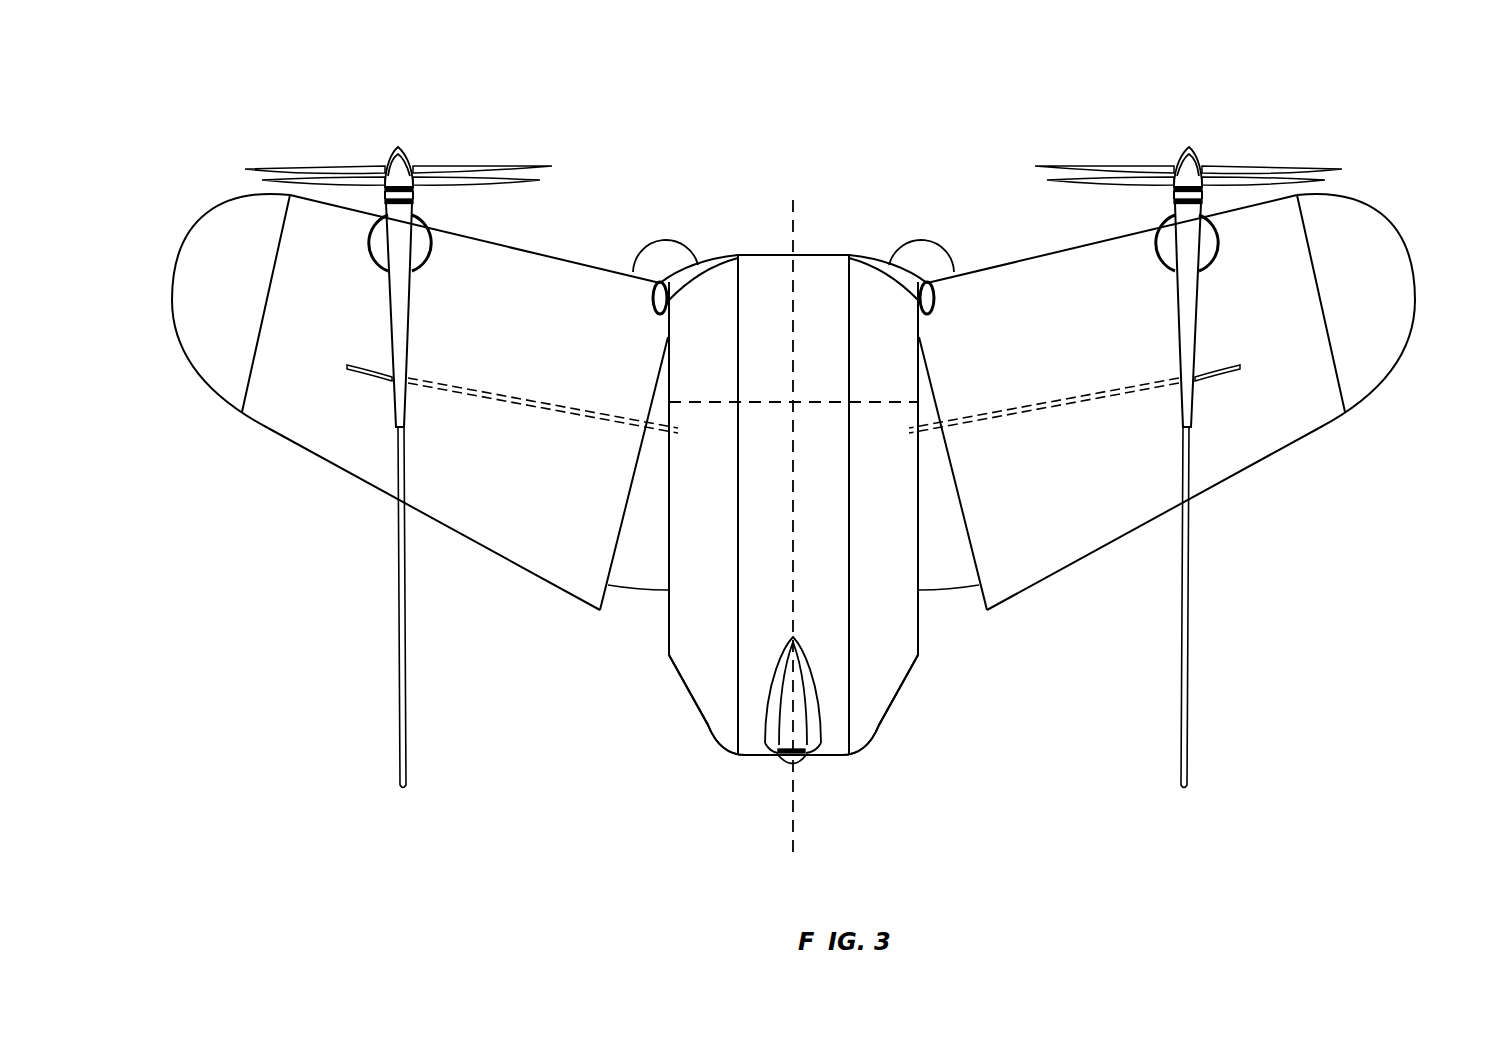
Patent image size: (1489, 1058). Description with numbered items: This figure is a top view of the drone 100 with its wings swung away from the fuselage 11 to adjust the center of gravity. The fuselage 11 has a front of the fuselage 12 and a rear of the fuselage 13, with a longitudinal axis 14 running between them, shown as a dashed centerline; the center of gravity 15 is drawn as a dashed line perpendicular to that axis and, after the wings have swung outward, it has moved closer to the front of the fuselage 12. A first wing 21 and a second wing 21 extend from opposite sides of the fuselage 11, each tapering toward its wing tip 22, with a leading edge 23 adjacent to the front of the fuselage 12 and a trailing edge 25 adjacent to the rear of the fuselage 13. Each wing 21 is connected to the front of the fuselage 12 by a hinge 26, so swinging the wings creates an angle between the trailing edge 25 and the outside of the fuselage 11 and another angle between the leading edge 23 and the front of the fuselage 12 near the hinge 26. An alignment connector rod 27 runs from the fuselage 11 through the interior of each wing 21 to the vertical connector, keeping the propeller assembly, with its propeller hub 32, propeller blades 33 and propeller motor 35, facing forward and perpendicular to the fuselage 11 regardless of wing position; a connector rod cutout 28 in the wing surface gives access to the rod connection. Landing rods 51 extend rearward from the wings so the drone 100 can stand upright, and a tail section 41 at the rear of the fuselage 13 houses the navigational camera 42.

The drone 100 is at (208, 98).
The fuselage 11 is at (920, 632).
The front of the fuselage 12 is at (814, 238).
The rear of the fuselage 13 is at (721, 772).
The longitudinal axis 14 is at (790, 214).
The center of gravity 15 is at (876, 395).
The wing 21 is at (588, 607).
The wing tip 22 is at (178, 238).
The leading edge 23 is at (512, 248).
The trailing edge 25 is at (514, 563).
The hinge 26 is at (651, 298).
The alignment connector rod 27 is at (503, 398).
The connector rod cutout 28 is at (1220, 378).
The propeller hub 32 is at (400, 147).
The propeller blades 33 is at (278, 167).
The propeller motor 35 is at (385, 197).
The tail section 41 is at (820, 716).
The navigational camera 42 is at (794, 768).
The landing rod 51 is at (400, 765).